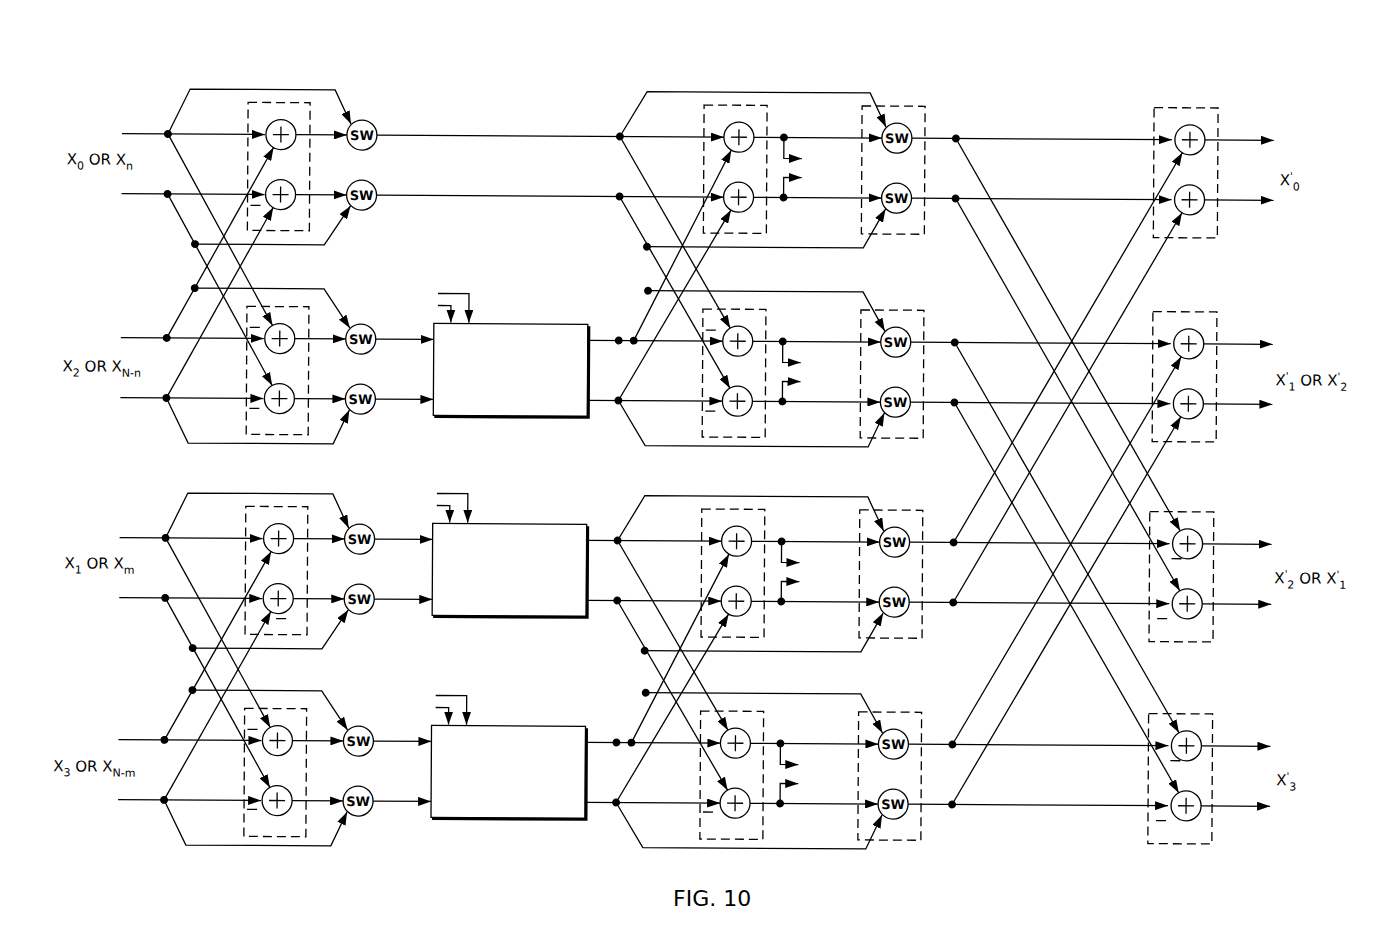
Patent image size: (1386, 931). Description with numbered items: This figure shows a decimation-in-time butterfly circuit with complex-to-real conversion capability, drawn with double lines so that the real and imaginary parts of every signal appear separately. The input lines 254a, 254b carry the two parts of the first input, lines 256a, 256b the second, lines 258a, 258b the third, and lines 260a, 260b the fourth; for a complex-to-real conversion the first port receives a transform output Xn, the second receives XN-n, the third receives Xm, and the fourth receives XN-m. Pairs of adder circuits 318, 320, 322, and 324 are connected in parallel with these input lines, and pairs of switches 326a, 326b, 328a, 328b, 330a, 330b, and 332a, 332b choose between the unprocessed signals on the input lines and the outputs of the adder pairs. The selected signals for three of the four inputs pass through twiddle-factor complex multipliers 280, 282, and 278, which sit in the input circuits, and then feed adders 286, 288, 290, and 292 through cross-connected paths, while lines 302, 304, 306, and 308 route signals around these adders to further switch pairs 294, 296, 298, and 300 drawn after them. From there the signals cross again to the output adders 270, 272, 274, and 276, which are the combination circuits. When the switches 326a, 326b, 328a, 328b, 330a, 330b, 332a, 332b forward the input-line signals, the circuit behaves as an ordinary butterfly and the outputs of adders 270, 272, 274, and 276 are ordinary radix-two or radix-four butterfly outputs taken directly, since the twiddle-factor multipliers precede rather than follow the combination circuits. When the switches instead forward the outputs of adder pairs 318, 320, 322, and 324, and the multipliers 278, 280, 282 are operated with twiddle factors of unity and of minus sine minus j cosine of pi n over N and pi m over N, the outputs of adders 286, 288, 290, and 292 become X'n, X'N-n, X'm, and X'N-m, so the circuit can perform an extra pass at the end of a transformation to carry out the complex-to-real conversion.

The input line 254a is at (181, 108).
The input line 254b is at (177, 218).
The input line 256a is at (184, 300).
The input line 256b is at (177, 423).
The input line 258a is at (178, 512).
The input line 258b is at (177, 620).
The input line 260a is at (178, 712).
The input line 260b is at (176, 820).
The pair of adder circuits 318 is at (246, 119).
The pair of adder circuits 320 is at (245, 360).
The pair of adder circuits 322 is at (245, 511).
The pair of adder circuits 324 is at (244, 768).
The switch 326a is at (373, 124).
The switch 326b is at (373, 186).
The switch 328a is at (362, 320).
The switch 328b is at (362, 418).
The switch 330a is at (363, 522).
The switch 330b is at (363, 618).
The switch 332a is at (363, 722).
The switch 332b is at (363, 818).
The complex multiplier 280 is at (505, 325).
The complex multiplier 282 is at (505, 525).
The complex multiplier 278 is at (505, 727).
The adder 286 is at (702, 120).
The adder 288 is at (702, 368).
The adder 290 is at (702, 530).
The adder 292 is at (702, 768).
The bypass lines 302 is at (836, 93).
The bypass lines 304 is at (836, 290).
The bypass lines 306 is at (836, 497).
The line 308 is at (836, 695).
The switch pair 294 is at (889, 106).
The switch pair 296 is at (889, 310).
The switch pair 298 is at (889, 510).
The switch pair 300 is at (889, 710).
The adder 270 is at (1183, 107).
The adder 272 is at (1183, 310).
The adder 274 is at (1181, 510).
The adder 276 is at (1181, 712).